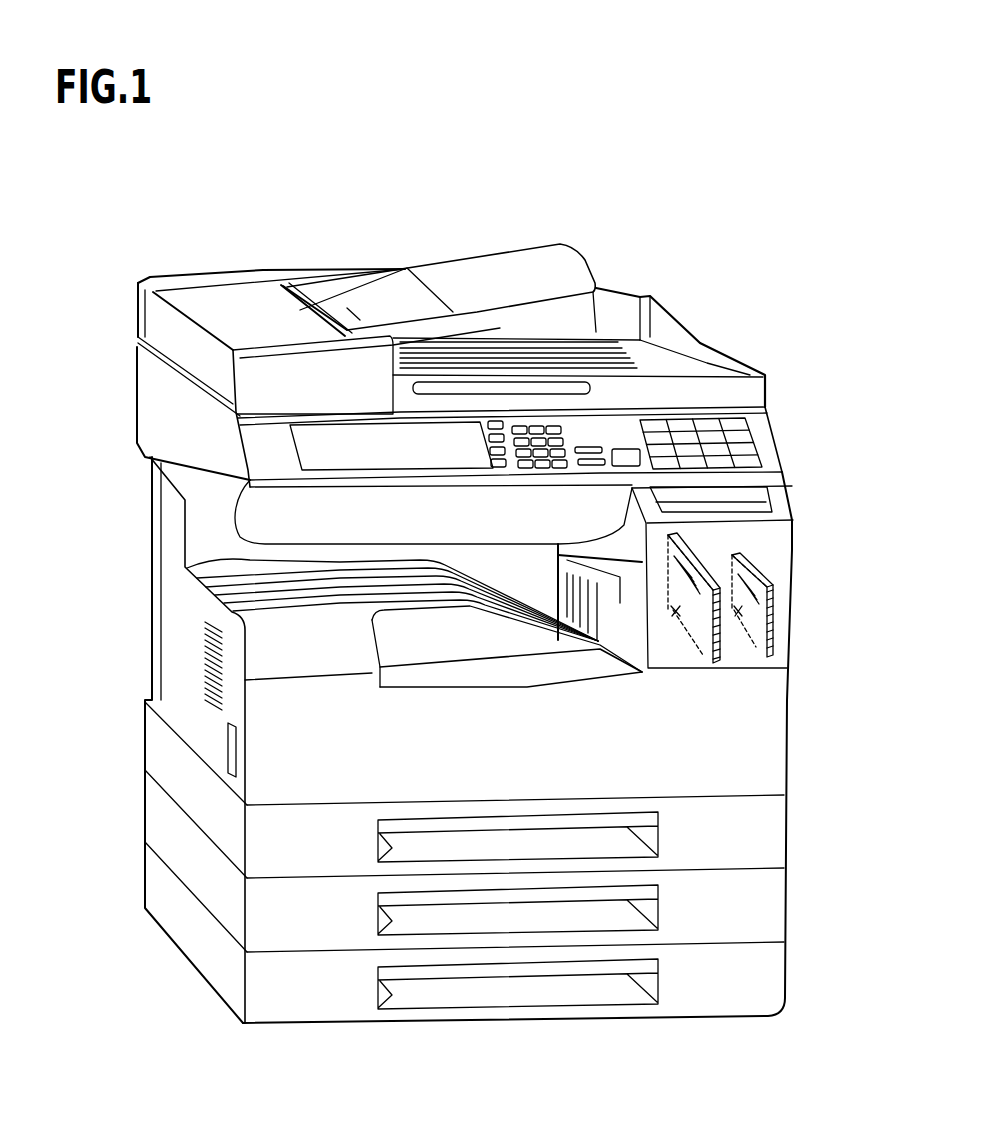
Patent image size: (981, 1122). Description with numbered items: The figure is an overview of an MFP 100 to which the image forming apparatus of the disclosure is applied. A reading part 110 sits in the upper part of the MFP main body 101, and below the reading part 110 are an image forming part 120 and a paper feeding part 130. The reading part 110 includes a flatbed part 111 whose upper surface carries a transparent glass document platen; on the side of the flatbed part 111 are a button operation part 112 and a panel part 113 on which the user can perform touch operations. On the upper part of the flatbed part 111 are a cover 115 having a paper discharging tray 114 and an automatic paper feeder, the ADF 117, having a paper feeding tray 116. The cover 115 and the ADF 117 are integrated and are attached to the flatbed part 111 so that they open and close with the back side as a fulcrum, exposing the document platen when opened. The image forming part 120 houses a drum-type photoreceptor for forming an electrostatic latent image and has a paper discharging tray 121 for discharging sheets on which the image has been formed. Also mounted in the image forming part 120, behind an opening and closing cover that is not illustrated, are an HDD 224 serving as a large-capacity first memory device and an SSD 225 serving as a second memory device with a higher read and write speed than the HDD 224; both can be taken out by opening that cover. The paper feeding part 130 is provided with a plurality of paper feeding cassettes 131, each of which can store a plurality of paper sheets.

The MFP 100 is at (680, 210).
The MFP main body 101 is at (152, 565).
The reading part 110 is at (828, 287).
The flatbed part 111 is at (146, 400).
The button operation part 112 is at (724, 423).
The panel part 113 is at (313, 456).
The paper discharging tray 114 is at (618, 354).
The cover 115 is at (697, 320).
The paper feeding tray 116 is at (388, 313).
The automatic paper feeder (ADF) 117 is at (193, 262).
The image forming part 120 is at (828, 533).
The paper discharging tray 121 is at (187, 568).
The paper feeding part 130 is at (831, 802).
The paper feeding cassettes 131 is at (147, 758).
The HDD (first memory device) 224 is at (677, 615).
The SSD (second memory device) 225 is at (738, 622).